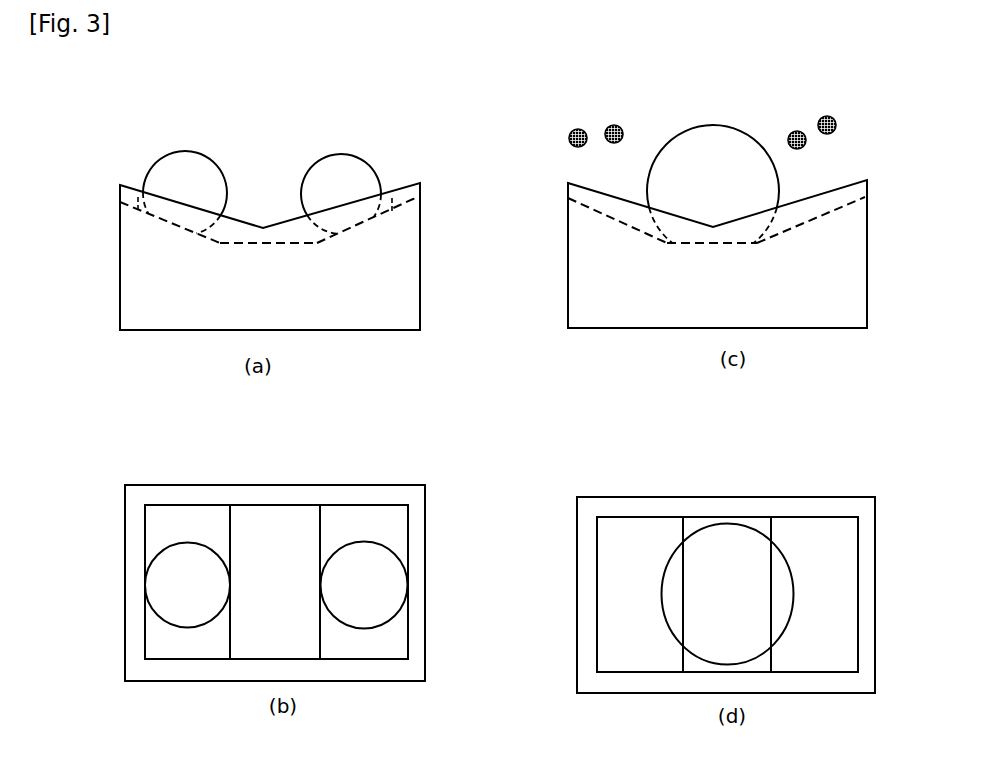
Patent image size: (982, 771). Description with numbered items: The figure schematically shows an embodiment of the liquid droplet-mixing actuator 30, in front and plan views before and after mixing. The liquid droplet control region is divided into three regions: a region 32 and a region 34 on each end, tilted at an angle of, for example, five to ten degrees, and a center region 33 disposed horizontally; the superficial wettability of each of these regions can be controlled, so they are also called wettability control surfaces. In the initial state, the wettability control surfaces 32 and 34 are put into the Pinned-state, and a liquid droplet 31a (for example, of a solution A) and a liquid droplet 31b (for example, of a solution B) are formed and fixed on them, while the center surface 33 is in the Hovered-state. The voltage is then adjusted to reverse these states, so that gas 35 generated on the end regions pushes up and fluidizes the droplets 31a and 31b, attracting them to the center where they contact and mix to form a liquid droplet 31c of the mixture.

The liquid droplet-mixing actuator 30 is at (120, 283).
The liquid droplet 31a is at (188, 170).
The liquid droplet 31b is at (345, 166).
The liquid droplet 31c is at (718, 144).
The region 32 is at (137, 200).
The region 33 is at (252, 243).
The region 34 is at (396, 205).
The gas 35 is at (834, 119).